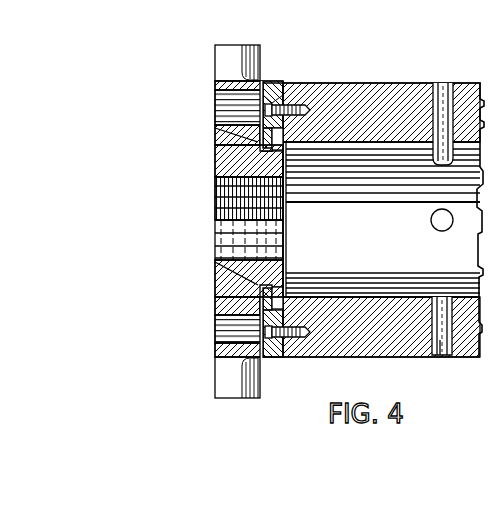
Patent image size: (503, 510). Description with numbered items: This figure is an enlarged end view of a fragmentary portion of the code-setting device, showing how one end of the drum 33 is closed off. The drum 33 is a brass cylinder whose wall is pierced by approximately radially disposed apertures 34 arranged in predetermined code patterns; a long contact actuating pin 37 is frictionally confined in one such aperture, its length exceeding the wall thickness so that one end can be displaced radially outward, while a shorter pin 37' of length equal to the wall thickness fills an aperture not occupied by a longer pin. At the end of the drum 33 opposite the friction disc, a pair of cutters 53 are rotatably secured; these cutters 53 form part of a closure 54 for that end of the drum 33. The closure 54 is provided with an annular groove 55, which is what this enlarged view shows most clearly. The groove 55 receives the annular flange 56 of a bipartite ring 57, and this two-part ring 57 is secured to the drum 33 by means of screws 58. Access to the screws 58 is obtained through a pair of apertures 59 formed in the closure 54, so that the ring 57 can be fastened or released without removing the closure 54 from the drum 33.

The drum 33 is at (368, 83).
The aperture 34 is at (433, 97).
The pin 37 is at (455, 109).
The pin 37' is at (429, 346).
The cutter 53 is at (222, 52).
The closure 54 is at (228, 158).
The annular groove 55 is at (258, 142).
The annular flange 56 is at (260, 128).
The bipartite ring 57 is at (277, 83).
The screw 58 is at (300, 105).
The aperture 59 is at (227, 101).